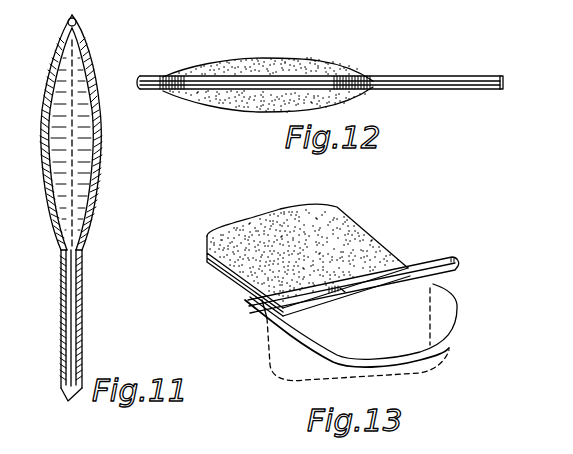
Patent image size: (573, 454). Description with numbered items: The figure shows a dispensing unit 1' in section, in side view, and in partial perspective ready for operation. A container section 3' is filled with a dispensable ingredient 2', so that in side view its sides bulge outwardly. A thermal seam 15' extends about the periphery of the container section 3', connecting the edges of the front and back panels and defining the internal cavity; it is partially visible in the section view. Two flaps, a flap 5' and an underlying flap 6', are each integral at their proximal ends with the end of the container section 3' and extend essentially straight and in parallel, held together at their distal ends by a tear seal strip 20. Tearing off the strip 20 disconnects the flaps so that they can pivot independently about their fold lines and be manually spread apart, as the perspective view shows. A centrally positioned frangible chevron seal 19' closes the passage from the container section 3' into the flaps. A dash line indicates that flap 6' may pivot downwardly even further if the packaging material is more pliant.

In FIG. 11, the applicator device 1' is at (69, 222).
In FIG. 12, the applicator device 1' is at (321, 74).
In FIG. 13, the applicator device 1' is at (334, 280).
In FIG. 11, the ingredient 2' is at (52, 143).
In FIG. 11, the container section 3' is at (57, 132).
In FIG. 12, the container section 3' is at (268, 71).
In FIG. 11, the flap 5' is at (49, 319).
In FIG. 12, the flap 5' is at (318, 67).
In FIG. 13, the flap 5' is at (353, 271).
In FIG. 11, the underlying flap 6' is at (94, 319).
In FIG. 12, the underlying flap 6' is at (320, 104).
In FIG. 13, the underlying flap 6' is at (362, 332).
In FIG. 11, the thermal seam 15' is at (97, 38).
In FIG. 11, the frangible chevron seal 19' is at (92, 266).
In FIG. 13, the frangible chevron seal 19' is at (363, 315).
In FIG. 11, the tear seal strip 20 is at (66, 403).
In FIG. 12, the tear seal strip 20 is at (502, 77).